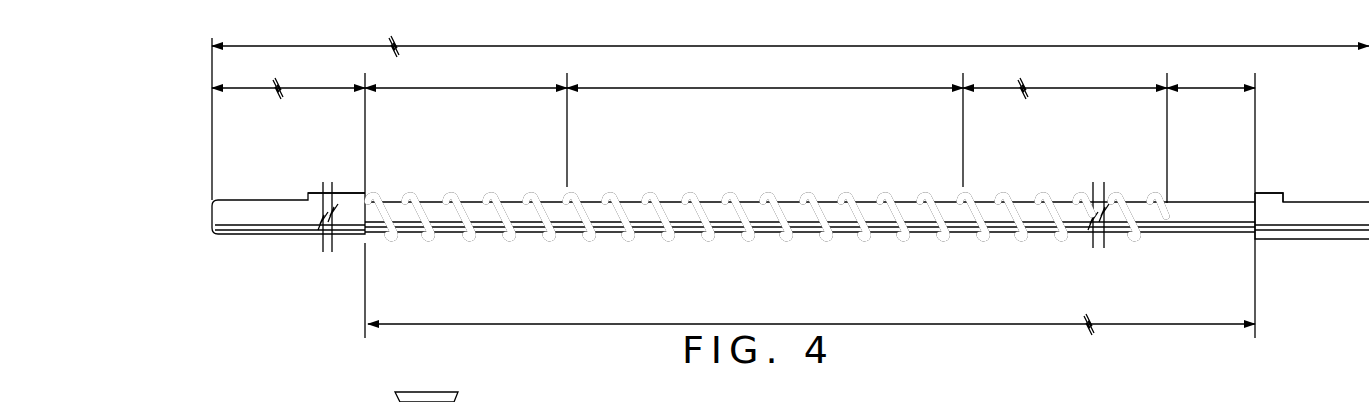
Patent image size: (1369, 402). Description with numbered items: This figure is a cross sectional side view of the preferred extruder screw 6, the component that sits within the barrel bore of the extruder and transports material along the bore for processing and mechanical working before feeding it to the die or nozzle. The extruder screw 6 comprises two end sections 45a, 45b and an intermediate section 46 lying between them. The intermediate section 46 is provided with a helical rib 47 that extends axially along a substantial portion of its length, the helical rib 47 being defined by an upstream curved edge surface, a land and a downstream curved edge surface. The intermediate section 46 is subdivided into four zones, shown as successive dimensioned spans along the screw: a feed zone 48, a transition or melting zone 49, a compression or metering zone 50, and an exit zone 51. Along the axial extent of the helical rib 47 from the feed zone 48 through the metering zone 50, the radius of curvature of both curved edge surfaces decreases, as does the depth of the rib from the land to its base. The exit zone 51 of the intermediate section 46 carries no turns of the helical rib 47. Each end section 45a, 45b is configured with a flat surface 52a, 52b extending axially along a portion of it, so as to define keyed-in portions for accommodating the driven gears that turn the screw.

The extruder screw 6 is at (352, 250).
The end section 45a is at (278, 220).
The end section 45b is at (1345, 220).
The intermediate section 46 is at (597, 323).
The helical rib 47 is at (823, 238).
The feed zone 48 is at (504, 89).
The transition (melting) zone 49 is at (743, 89).
The compression or metering zone 50 is at (1106, 89).
The exit zone 51 is at (1212, 89).
The flat surface 52a is at (300, 198).
The flat surface 52b is at (1317, 202).